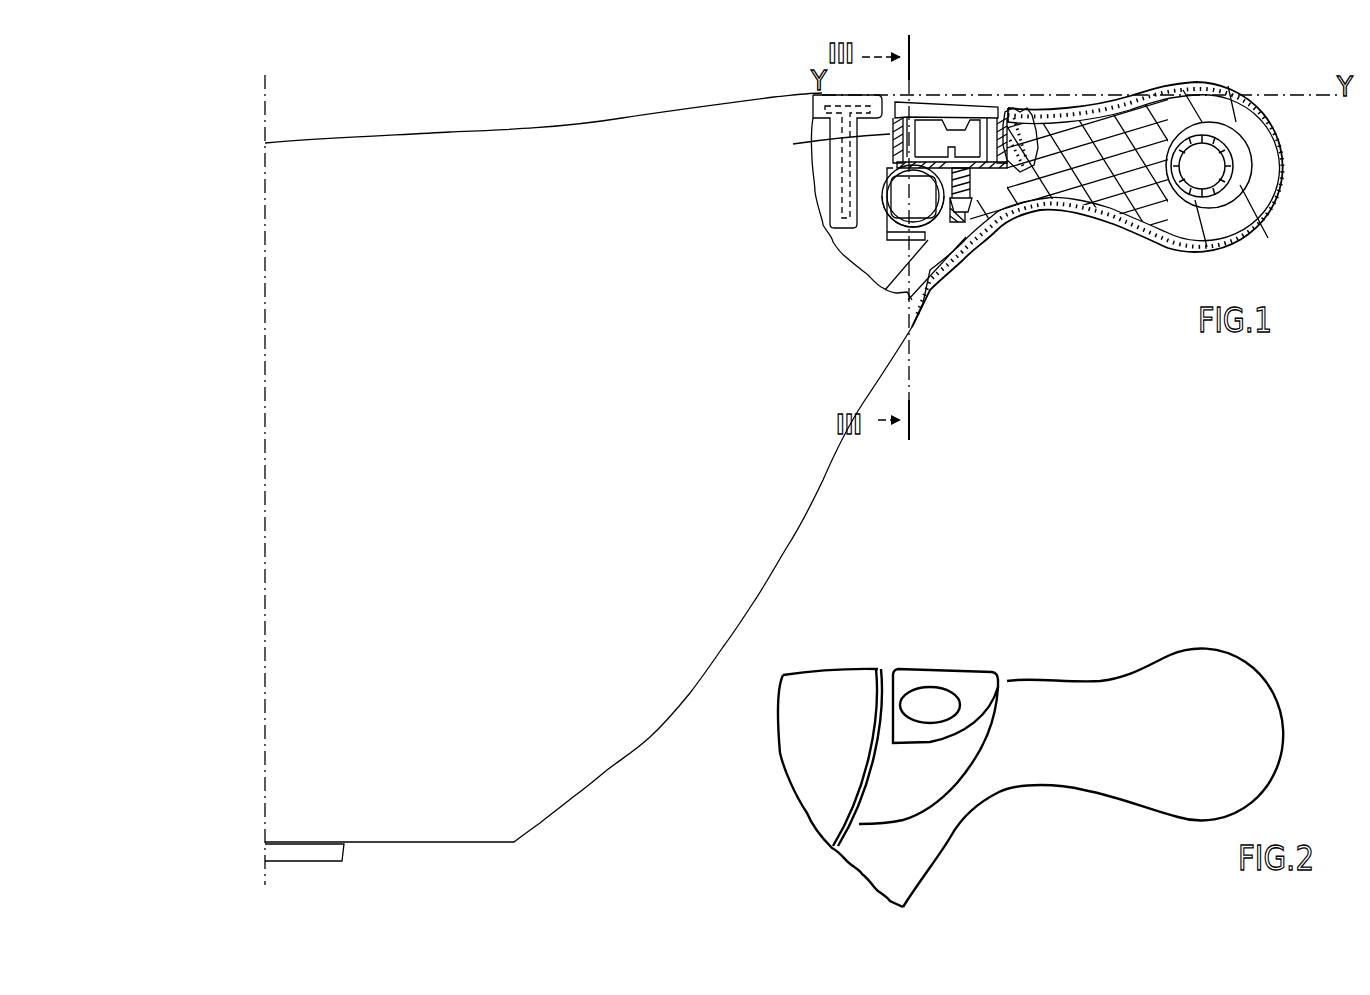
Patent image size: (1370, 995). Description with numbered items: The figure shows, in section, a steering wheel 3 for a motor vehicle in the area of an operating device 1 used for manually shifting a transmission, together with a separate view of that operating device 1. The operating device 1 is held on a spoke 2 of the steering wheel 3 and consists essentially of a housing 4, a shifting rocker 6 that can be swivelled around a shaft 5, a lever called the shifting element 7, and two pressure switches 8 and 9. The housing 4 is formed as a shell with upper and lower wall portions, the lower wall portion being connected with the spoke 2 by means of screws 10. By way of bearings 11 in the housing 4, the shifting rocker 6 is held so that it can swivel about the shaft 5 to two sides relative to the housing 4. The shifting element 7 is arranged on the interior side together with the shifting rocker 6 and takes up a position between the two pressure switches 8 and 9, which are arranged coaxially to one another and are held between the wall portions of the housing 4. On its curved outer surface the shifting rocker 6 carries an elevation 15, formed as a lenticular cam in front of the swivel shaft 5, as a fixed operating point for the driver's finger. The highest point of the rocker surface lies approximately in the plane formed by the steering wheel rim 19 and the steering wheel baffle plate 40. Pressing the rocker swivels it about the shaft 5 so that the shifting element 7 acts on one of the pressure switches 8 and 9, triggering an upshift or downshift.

In FIG. 1, the operating device 1 is at (985, 76).
In FIG. 1, the spoke 2 is at (1040, 205).
In FIG. 1, the steering wheel 3 is at (1122, 185).
In FIG. 2, the steering wheel 3 is at (1272, 642).
In FIG. 1, the housing 4 is at (893, 165).
In FIG. 2, the housing 4 is at (917, 793).
In FIG. 1, the shaft 5 is at (1015, 140).
In FIG. 1, the shifting rocker 6 is at (925, 102).
In FIG. 2, the shifting rocker 6 is at (954, 674).
In FIG. 1, the shifting element 7 is at (912, 186).
In FIG. 1, the pressure switch 8 is at (944, 262).
In FIG. 1, the pressure switch 9 is at (917, 210).
In FIG. 1, the screws 10 is at (962, 170).
In FIG. 1, the bearings 11 is at (830, 142).
In FIG. 2, the elevation 15 is at (930, 700).
In FIG. 1, the steering wheel rim 19 is at (1288, 175).
In FIG. 1, the steering wheel baffle plate 40 is at (679, 135).